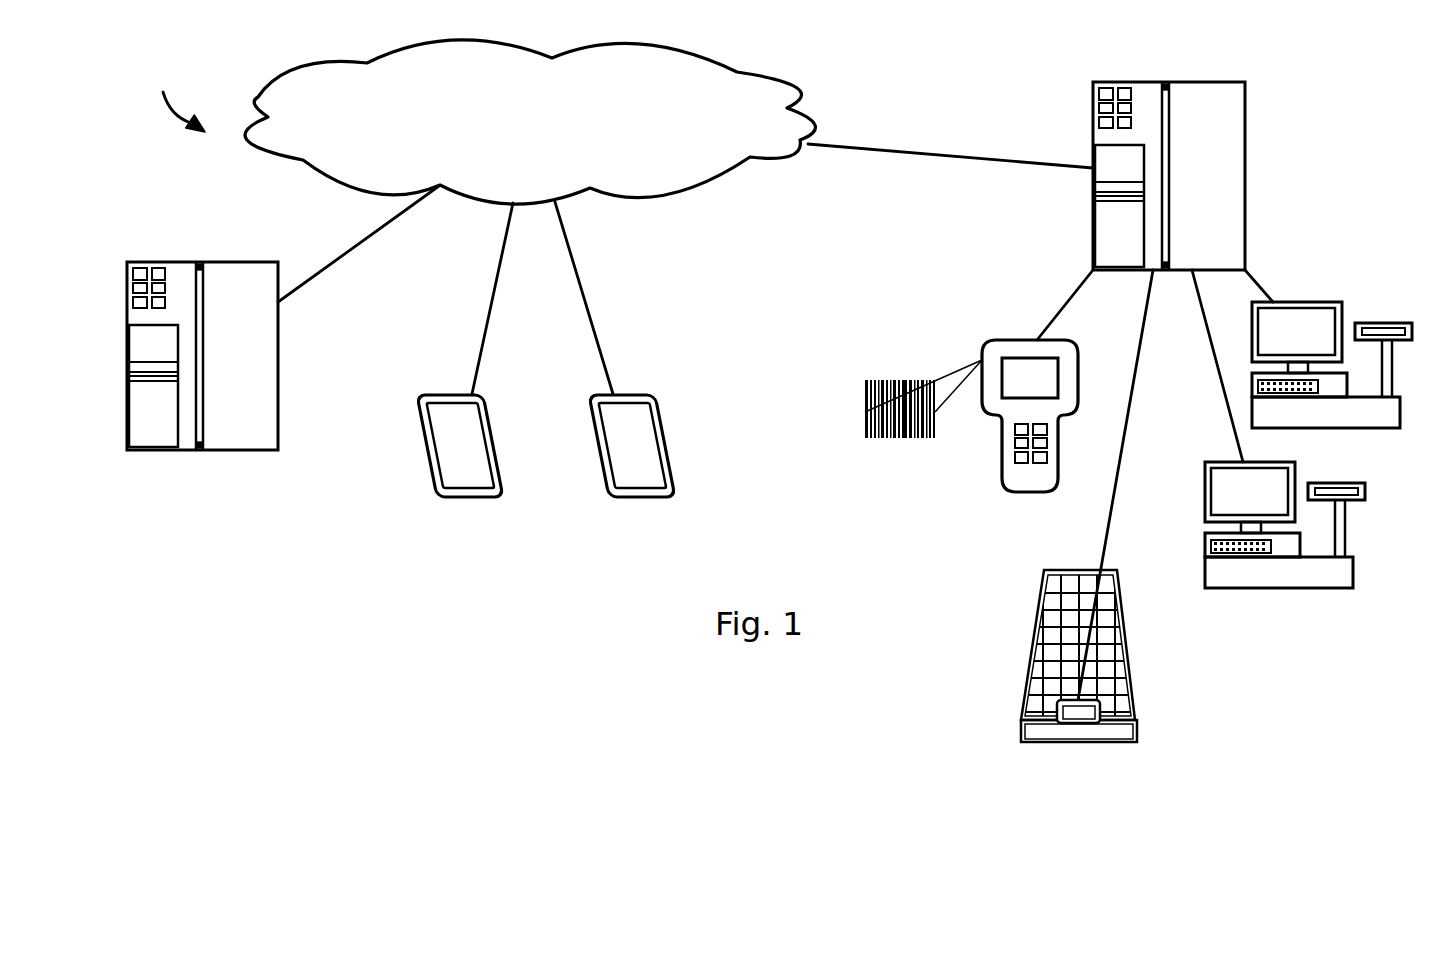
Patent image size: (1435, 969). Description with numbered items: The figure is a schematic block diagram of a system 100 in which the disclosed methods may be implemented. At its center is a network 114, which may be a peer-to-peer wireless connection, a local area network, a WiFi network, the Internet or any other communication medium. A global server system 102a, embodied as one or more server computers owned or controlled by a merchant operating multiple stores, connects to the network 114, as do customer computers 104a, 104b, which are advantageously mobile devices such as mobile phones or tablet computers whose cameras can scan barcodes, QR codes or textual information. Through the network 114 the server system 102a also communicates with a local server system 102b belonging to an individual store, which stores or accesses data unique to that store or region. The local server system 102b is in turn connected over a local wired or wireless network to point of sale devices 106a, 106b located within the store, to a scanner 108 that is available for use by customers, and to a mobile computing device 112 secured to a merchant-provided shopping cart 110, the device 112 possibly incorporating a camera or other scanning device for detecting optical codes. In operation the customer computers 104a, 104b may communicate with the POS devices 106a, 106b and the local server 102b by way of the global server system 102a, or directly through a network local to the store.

The system 100 is at (168, 95).
The server system 102a is at (272, 347).
The local server system 102b is at (1237, 166).
The customer computer 104a is at (427, 442).
The customer computer 104b is at (599, 442).
The point of sale (POS) device 106a is at (1327, 346).
The point of sale (POS) device 106b is at (1280, 506).
The scanner 108 is at (997, 352).
The shopping cart 110 is at (1042, 638).
The mobile computing device 112 is at (1080, 723).
The network 114 is at (597, 134).